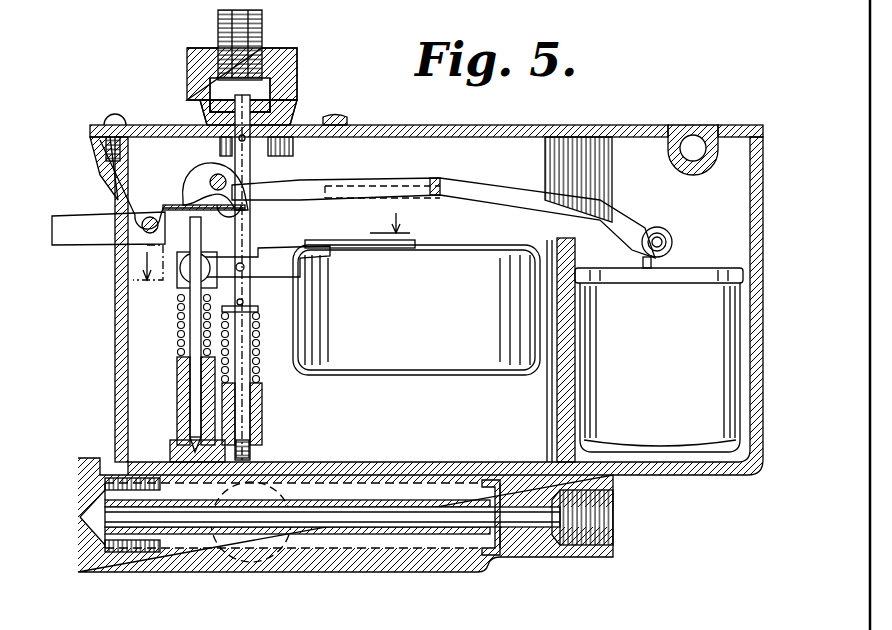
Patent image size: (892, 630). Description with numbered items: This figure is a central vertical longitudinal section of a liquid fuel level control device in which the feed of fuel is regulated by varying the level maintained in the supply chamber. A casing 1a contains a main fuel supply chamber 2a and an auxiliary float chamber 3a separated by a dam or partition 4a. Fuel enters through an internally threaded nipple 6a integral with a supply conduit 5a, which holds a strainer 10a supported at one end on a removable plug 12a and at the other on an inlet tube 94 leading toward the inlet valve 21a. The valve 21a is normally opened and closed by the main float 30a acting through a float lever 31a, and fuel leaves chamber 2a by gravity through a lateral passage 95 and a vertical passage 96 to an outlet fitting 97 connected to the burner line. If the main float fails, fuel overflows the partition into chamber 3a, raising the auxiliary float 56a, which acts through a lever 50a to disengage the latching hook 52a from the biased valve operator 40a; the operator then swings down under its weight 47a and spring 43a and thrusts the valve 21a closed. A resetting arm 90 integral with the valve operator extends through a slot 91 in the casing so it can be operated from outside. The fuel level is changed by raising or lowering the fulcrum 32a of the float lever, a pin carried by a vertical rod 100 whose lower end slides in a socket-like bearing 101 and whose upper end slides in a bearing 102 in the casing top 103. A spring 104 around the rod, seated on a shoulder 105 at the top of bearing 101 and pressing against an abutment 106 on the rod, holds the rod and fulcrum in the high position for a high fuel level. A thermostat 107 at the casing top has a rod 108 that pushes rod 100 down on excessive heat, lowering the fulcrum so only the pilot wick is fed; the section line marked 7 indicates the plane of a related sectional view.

The thermostat rod 108 is at (240, 42).
The thermostat 107 is at (284, 45).
The casing top 103 is at (152, 128).
The vertical rod 100 is at (292, 108).
The bearing 102 is at (296, 127).
The spring 43a is at (143, 200).
The valve operator 40a is at (184, 176).
The latching hook 52a is at (240, 194).
The weight 47a is at (432, 178).
The lever 50a is at (490, 201).
The resetting arm 90 is at (80, 240).
The slot 91 is at (113, 243).
The fulcrum 32a is at (243, 262).
The float lever 31a is at (285, 256).
The section line 7 is at (273, 258).
The abutment 106 is at (268, 298).
The vertical passage 96 is at (265, 338).
The main float 30a is at (416, 310).
The spring 104 is at (265, 383).
The shoulder 105 is at (275, 398).
The lateral passage 95 is at (263, 414).
The socket-like bearing 101 is at (262, 442).
The outlet fitting 97 is at (300, 518).
The casing 1a is at (115, 382).
The inlet valve 21a is at (177, 388).
The main fuel supply chamber 2a is at (423, 420).
The dam or partition 4a is at (567, 390).
The auxiliary float 56a is at (655, 386).
The auxiliary float chamber 3a is at (717, 456).
The removable plug 12a is at (78, 566).
The strainer 10a is at (430, 549).
The supply conduit 5a is at (500, 559).
The inlet tube 94 is at (537, 532).
The nipple 6a is at (598, 560).